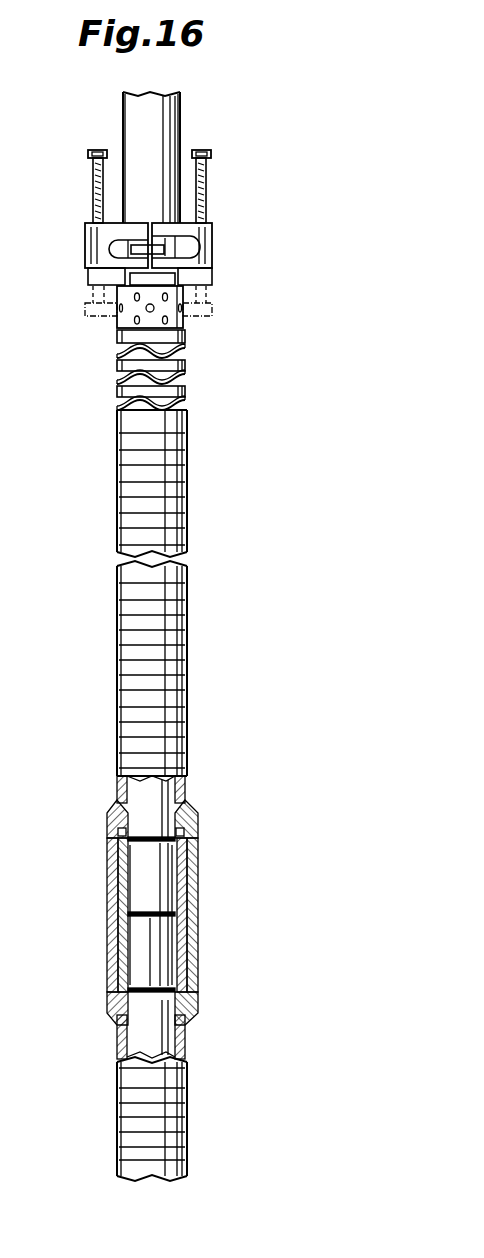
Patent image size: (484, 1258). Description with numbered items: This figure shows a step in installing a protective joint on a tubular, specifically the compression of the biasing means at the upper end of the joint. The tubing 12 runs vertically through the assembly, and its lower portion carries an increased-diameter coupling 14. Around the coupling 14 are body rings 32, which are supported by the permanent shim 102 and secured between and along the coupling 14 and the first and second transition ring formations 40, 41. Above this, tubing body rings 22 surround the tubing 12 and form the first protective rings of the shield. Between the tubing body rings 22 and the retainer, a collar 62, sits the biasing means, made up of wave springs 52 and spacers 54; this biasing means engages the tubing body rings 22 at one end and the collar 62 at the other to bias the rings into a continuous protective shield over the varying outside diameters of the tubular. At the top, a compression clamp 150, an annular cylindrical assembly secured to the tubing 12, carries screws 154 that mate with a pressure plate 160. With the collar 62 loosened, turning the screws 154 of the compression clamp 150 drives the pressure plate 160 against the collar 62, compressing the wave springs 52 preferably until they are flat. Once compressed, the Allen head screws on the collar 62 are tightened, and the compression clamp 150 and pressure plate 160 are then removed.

The tubing 12 is at (172, 143).
The coupling 14 is at (162, 878).
The tubing body rings 22 is at (178, 463).
The body rings 32 is at (198, 913).
The first transition ring formation 40 is at (198, 808).
The second transition ring formation 41 is at (192, 1018).
The wave springs 52 is at (185, 379).
The spacers 54 is at (185, 390).
The collar 62 is at (185, 326).
The permanent shim 102 is at (168, 965).
The compression clamp 150 is at (212, 258).
The screws 154 is at (207, 196).
The pressure plate 160 is at (213, 279).